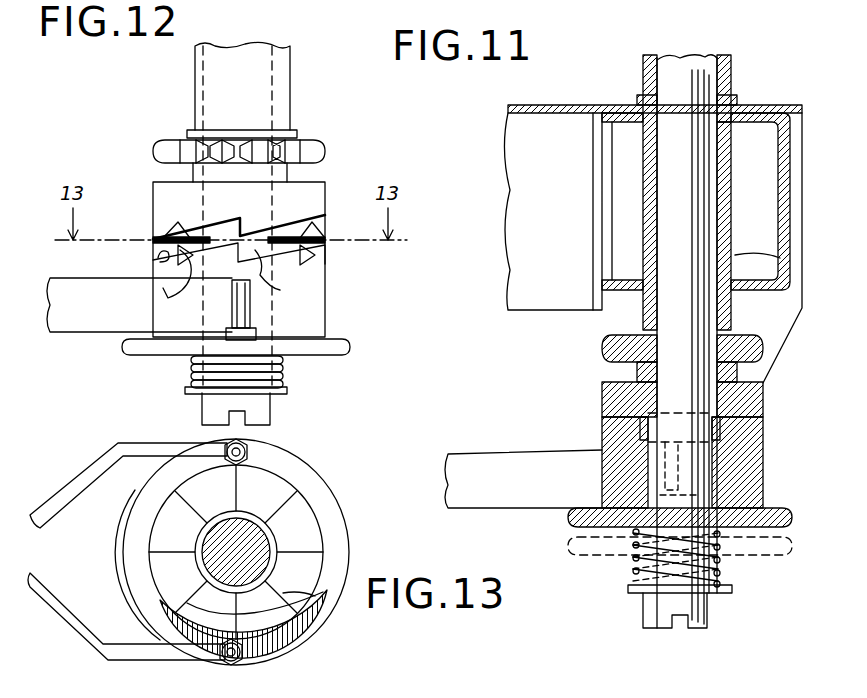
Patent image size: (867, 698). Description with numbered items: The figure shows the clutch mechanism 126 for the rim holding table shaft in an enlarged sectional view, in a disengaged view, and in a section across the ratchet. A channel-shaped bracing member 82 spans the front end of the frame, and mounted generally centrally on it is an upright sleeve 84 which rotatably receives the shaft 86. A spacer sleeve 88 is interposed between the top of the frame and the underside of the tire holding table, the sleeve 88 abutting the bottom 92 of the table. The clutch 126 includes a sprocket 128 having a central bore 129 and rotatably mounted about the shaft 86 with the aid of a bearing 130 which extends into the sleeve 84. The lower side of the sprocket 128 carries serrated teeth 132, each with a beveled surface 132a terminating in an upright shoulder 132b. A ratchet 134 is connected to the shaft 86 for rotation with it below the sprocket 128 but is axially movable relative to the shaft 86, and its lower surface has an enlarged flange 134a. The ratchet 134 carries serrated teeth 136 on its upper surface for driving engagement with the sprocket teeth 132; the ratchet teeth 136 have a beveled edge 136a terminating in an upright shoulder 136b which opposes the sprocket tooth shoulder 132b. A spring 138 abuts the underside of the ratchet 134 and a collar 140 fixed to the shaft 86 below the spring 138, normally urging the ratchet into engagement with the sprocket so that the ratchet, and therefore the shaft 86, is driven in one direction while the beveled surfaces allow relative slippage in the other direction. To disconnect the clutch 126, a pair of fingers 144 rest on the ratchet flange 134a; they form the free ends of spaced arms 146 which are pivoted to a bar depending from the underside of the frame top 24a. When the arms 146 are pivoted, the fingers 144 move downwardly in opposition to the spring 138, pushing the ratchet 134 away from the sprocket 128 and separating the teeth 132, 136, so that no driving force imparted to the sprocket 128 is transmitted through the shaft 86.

In FIG. 11, the frame top 24a is at (560, 95).
In FIG. 11, the channel-shaped bracing member 82 is at (791, 236).
In FIG. 11, the upright sleeve 84 is at (731, 165).
In FIG. 12, the shaft 86 is at (200, 402).
In FIG. 13, the shaft 86 is at (272, 534).
In FIG. 11, the shaft 86 is at (667, 60).
In FIG. 12, the spacer sleeve 88 is at (195, 78).
In FIG. 11, the spacer sleeve 88 is at (735, 68).
In FIG. 12, the bottom 92 is at (296, 0).
In FIG. 11, the bottom 92 is at (735, 0).
In FIG. 12, the clutch mechanism 126 is at (138, 192).
In FIG. 11, the clutch mechanism 126 is at (582, 407).
In FIG. 12, the sprocket 128 is at (315, 143).
In FIG. 11, the sprocket 128 is at (765, 350).
In FIG. 11, the central bore 129 is at (602, 347).
In FIG. 11, the bearing 130 is at (780, 258).
In FIG. 12, the serrated teeth 132 is at (165, 228).
In FIG. 12, the beveled surface 132a is at (296, 226).
In FIG. 12, the upright shoulder 132b is at (232, 223).
In FIG. 12, the ratchet 134 is at (325, 300).
In FIG. 13, the ratchet 134 is at (278, 468).
In FIG. 11, the ratchet 134 is at (765, 458).
In FIG. 12, the enlarged flange 134a is at (350, 333).
In FIG. 13, the enlarged flange 134a is at (332, 538).
In FIG. 11, the enlarged flange 134a is at (800, 522).
In FIG. 12, the serrated teeth 136 is at (330, 260).
In FIG. 13, the serrated teeth 136 is at (300, 600).
In FIG. 12, the beveled edge 136a is at (168, 282).
In FIG. 12, the upright shoulder 136b is at (193, 222).
In FIG. 12, the spring 138 is at (283, 376).
In FIG. 11, the spring 138 is at (722, 566).
In FIG. 12, the collar 140 is at (287, 392).
In FIG. 11, the collar 140 is at (733, 592).
In FIG. 13, the fingers 144 is at (225, 445).
In FIG. 11, the fingers 144 is at (730, 488).
In FIG. 12, the arms 146 is at (97, 258).
In FIG. 13, the arms 146 is at (80, 505).
In FIG. 11, the arms 146 is at (505, 492).